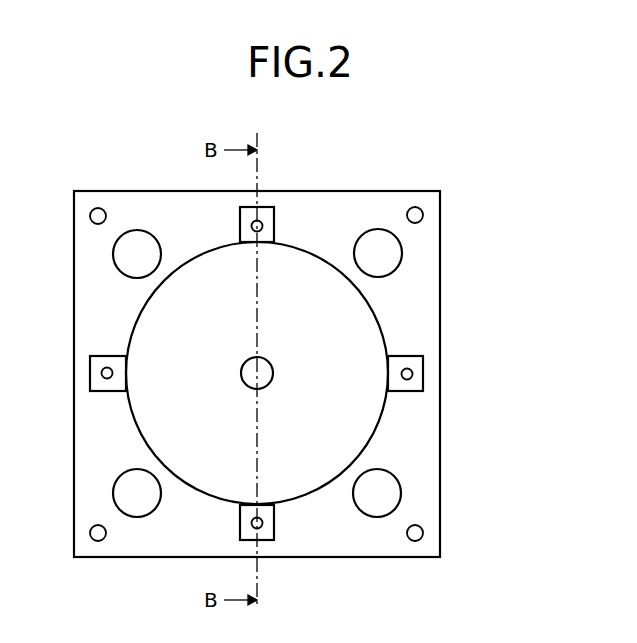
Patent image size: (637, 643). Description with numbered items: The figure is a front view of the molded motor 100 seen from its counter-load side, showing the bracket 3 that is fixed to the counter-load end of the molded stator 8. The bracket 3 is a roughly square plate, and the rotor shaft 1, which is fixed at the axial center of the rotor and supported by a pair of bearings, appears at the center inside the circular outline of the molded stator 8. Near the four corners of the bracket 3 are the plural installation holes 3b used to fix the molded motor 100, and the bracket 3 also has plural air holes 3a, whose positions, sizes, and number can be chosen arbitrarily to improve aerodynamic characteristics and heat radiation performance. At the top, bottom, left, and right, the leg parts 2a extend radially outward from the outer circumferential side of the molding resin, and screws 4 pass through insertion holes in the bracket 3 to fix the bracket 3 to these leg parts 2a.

The molded motor 100 is at (444, 146).
The rotor shaft 1 is at (275, 370).
The leg parts 2a is at (424, 383).
The bracket 3 is at (441, 272).
The air holes 3a is at (400, 493).
The installation holes 3b is at (423, 533).
The screws 4 is at (413, 373).
The molded stator 8 is at (385, 420).